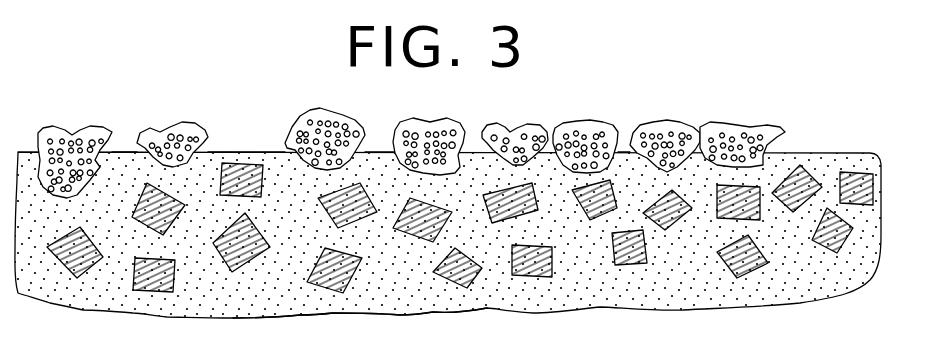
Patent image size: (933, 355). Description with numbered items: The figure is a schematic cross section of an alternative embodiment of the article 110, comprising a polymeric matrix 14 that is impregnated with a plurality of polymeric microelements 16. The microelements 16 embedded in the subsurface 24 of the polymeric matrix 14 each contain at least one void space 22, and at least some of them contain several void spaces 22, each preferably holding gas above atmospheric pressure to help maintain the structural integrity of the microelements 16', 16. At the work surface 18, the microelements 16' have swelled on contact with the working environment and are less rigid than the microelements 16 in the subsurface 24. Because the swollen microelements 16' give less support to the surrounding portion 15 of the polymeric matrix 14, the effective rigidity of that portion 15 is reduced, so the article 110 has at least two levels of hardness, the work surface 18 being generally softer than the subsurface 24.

The polymeric matrix 14 is at (704, 292).
The portion of the polymeric matrix 15 is at (122, 151).
The polymeric microelement 16 is at (569, 211).
The polymeric microelement at the work surface 16' is at (742, 123).
The work surface 18 is at (237, 151).
The void space 22 is at (499, 123).
The subsurface 24 is at (588, 296).
The article 110 is at (659, 100).